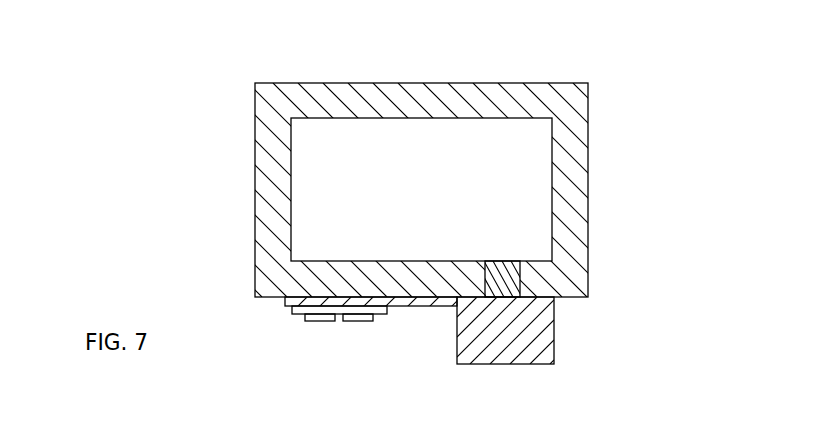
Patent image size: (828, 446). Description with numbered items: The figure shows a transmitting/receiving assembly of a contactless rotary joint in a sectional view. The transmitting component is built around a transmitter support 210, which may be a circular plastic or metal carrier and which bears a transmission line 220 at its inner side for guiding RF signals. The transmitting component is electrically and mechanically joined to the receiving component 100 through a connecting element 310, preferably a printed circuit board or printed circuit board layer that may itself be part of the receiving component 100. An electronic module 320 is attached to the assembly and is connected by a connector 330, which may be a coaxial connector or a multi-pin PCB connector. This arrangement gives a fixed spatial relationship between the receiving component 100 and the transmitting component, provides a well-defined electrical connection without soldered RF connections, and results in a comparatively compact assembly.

The receiving component 100 is at (507, 335).
The transmitter support 210 is at (460, 105).
The transmission line 220 is at (302, 310).
The connecting element 310 is at (417, 307).
The electronic module 320 is at (367, 147).
The connector 330 is at (507, 280).